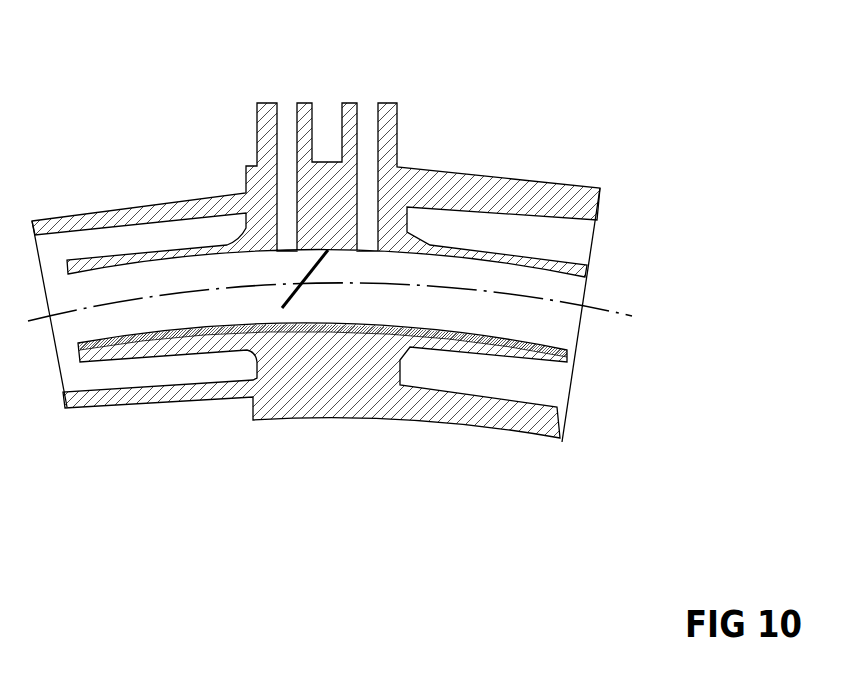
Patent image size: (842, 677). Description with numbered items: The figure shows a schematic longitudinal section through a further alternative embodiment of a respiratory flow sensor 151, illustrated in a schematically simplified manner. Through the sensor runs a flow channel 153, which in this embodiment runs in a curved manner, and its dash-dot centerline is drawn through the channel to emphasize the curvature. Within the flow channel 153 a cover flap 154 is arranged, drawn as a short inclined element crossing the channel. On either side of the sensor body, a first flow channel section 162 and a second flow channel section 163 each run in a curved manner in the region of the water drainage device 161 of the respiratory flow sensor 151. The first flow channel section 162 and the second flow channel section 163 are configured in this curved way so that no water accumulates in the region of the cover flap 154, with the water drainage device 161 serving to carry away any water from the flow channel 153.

The respiratory flow sensor 151 is at (557, 98).
The flow channel 153 is at (388, 287).
The cover flap 154 is at (284, 310).
The water drainage device 161 is at (237, 362).
The first flow channel section 162 is at (130, 348).
The second flow channel section 163 is at (520, 352).